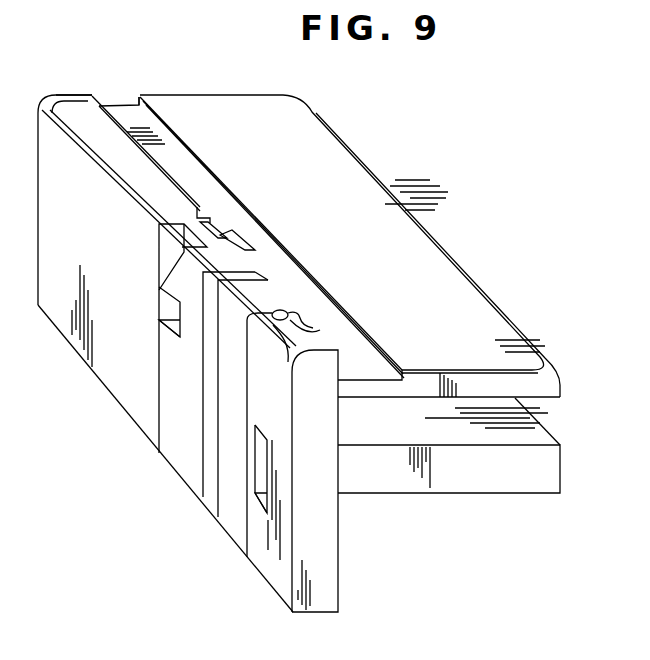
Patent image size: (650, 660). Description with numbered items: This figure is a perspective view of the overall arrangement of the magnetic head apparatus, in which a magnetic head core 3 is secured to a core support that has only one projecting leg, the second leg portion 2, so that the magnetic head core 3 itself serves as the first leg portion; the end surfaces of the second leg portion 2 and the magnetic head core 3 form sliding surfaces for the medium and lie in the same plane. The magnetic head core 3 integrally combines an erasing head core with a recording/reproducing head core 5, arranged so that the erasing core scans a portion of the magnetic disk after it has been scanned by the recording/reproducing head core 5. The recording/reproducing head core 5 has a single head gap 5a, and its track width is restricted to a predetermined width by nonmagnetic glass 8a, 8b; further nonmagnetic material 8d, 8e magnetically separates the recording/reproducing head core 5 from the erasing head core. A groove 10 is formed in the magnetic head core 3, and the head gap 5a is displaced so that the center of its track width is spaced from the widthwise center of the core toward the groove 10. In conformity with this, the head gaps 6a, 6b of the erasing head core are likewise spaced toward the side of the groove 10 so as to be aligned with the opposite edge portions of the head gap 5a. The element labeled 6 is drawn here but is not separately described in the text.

The second leg portion 2 is at (462, 300).
The magnetic head core 3 is at (75, 108).
The recording/reproducing head core 5 is at (130, 390).
The head gap 5a is at (197, 216).
The front member 6 is at (278, 562).
The head gap 6a is at (276, 330).
The head gap 6b is at (305, 325).
The nonmagnetic material 8a is at (220, 236).
The nonmagnetic material 8b is at (165, 251).
The nonmagnetic material 8d is at (270, 325).
The nonmagnetic material 8e is at (300, 313).
The groove 10 is at (123, 113).